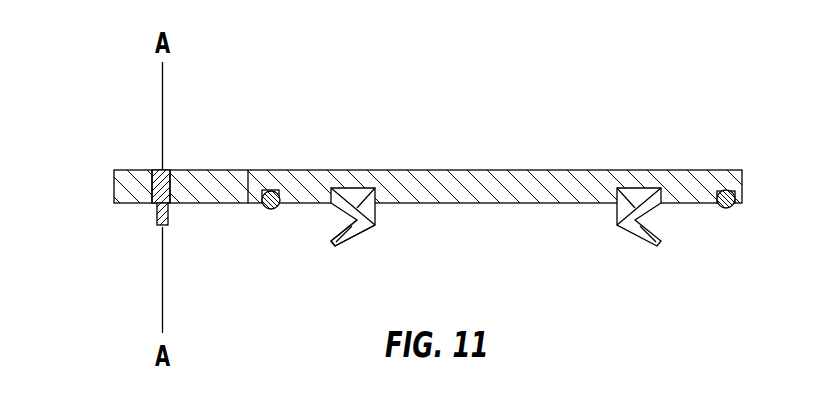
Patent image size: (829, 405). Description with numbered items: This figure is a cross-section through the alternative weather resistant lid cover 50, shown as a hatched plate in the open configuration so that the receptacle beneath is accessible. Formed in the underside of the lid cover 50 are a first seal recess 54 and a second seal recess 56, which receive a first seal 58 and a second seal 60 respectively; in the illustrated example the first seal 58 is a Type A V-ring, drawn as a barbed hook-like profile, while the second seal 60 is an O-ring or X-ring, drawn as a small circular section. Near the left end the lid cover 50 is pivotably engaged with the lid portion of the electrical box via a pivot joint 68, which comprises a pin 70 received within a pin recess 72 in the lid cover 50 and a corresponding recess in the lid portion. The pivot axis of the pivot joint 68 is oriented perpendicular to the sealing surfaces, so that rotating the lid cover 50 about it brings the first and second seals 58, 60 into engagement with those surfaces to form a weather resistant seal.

The lid cover 50 is at (536, 170).
The first seal recess 54 is at (374, 190).
The second seal recess 56 is at (270, 191).
The first seal 58 is at (363, 231).
The second seal 60 is at (273, 210).
The pivot joint 68 is at (139, 205).
The pin 70 is at (167, 229).
The pin recess 72 is at (153, 170).